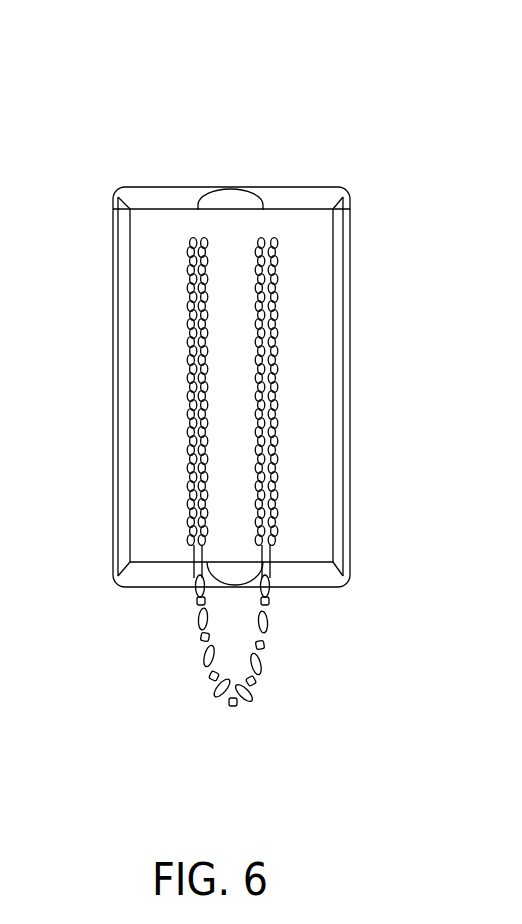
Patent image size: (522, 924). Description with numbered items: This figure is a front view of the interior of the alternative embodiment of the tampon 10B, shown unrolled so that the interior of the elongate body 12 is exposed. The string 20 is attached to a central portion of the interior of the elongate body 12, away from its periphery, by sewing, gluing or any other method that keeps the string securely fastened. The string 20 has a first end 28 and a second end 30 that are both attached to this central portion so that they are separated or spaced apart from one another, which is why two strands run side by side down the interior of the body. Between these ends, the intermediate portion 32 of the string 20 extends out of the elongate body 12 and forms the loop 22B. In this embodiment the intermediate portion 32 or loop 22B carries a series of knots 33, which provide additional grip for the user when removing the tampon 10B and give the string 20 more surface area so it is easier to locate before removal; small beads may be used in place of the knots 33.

The tampon 10B is at (258, 127).
The elongate body 12 is at (347, 385).
The string 20 is at (268, 580).
The first end 28 is at (265, 245).
The second end 30 is at (198, 245).
The intermediate portion 32 is at (247, 698).
The series of knots 33 is at (197, 601).
The loop 22B is at (206, 694).